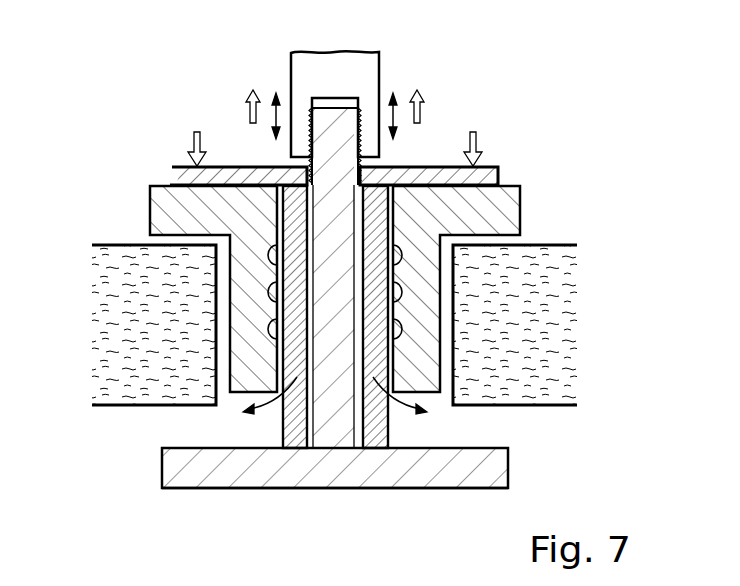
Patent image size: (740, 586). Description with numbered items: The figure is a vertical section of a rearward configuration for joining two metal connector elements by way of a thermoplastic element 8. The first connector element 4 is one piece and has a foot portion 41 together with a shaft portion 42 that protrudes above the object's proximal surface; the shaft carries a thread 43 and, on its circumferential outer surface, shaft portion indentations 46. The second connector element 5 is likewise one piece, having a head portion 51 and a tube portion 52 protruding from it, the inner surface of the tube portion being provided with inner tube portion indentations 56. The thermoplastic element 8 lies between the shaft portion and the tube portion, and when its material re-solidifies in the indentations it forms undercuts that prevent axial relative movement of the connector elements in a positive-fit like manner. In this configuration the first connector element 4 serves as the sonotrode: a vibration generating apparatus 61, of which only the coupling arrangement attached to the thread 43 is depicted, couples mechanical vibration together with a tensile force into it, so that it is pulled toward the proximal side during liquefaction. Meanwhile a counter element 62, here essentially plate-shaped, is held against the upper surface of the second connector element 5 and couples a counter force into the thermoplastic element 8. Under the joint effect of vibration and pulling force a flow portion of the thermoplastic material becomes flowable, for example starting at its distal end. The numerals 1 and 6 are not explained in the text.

The fluid 1 is at (531, 372).
The first connector element 4 is at (393, 464).
The foot portion 41 is at (468, 478).
The shaft portion 42 is at (250, 319).
The thread 43 is at (312, 140).
The second connector element 5 is at (457, 207).
The head portion 51 is at (198, 215).
The tube portion 52 is at (253, 308).
The inner tube portion indentations 56 is at (402, 333).
The shaft portion indentations 46 is at (400, 293).
The thermoplastic element 8 is at (367, 350).
The drive motion 6 is at (373, 138).
The vibration generating apparatus 61 is at (330, 72).
The counter element 62 is at (180, 177).